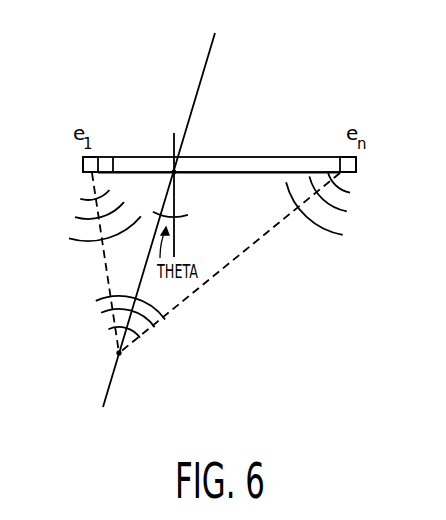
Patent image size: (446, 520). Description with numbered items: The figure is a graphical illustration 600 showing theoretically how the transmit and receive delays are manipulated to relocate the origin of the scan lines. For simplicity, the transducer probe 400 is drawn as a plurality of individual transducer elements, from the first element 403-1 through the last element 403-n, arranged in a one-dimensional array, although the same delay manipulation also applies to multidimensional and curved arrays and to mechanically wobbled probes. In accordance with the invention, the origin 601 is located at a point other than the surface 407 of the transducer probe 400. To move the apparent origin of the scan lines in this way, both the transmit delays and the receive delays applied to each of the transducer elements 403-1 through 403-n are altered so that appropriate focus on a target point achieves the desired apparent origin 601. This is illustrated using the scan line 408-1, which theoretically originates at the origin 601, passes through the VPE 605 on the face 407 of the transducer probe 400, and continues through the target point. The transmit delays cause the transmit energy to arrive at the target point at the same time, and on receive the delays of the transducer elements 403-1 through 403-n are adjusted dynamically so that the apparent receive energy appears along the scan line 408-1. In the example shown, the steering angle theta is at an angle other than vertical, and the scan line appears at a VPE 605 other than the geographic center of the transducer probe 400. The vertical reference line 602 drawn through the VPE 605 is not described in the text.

The transducer probe 400 is at (291, 128).
The transducer element e1 403-1 is at (82, 164).
The transducer element en 403-n is at (384, 172).
The surface of the transducer probe 407 is at (263, 174).
The scan line 408-1 is at (113, 378).
The graphical illustration 600 is at (84, 63).
The origin 601 is at (217, 37).
The normal line to array 602 is at (172, 147).
The VPE (virtual point of emanation) 605 is at (187, 183).